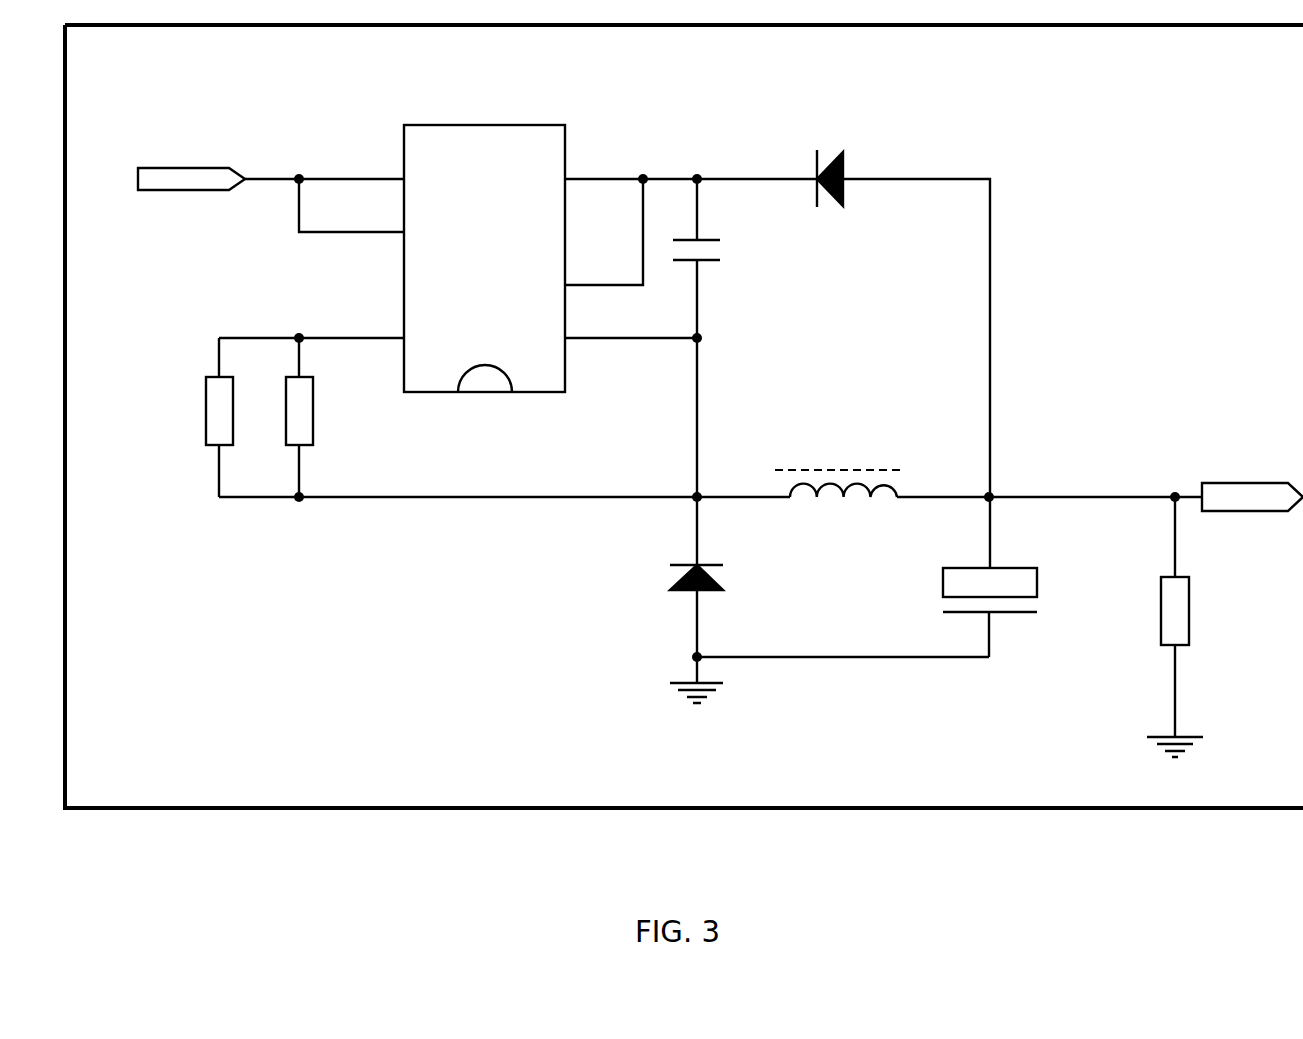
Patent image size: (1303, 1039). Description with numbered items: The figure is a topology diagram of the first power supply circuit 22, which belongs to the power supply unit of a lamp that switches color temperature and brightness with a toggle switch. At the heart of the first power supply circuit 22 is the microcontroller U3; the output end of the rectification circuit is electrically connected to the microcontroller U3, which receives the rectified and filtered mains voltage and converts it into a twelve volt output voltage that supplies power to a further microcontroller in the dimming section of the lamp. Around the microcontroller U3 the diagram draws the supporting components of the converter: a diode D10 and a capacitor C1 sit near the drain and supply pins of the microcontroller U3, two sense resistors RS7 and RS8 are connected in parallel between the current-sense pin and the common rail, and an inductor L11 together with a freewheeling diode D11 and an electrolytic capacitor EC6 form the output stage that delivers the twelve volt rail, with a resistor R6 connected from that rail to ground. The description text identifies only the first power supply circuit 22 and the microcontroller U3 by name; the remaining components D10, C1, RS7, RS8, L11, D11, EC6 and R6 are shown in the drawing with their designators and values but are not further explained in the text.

The first power supply circuit 22 is at (684, 453).
The microcontroller U3 is at (484, 273).
The diode ES1J D10 is at (867, 183).
The capacitor 1UF/50V C1 is at (742, 248).
The sense resistor 0.68R RS7 is at (241, 411).
The sense resistor 0.68R RS8 is at (322, 411).
The inductor CD43/102 L11 is at (842, 477).
The freewheeling diode ES1J D11 is at (769, 576).
The electrolytic capacitor 100UF/35V EC6 is at (1047, 586).
The resistor 100K R6 is at (1196, 606).